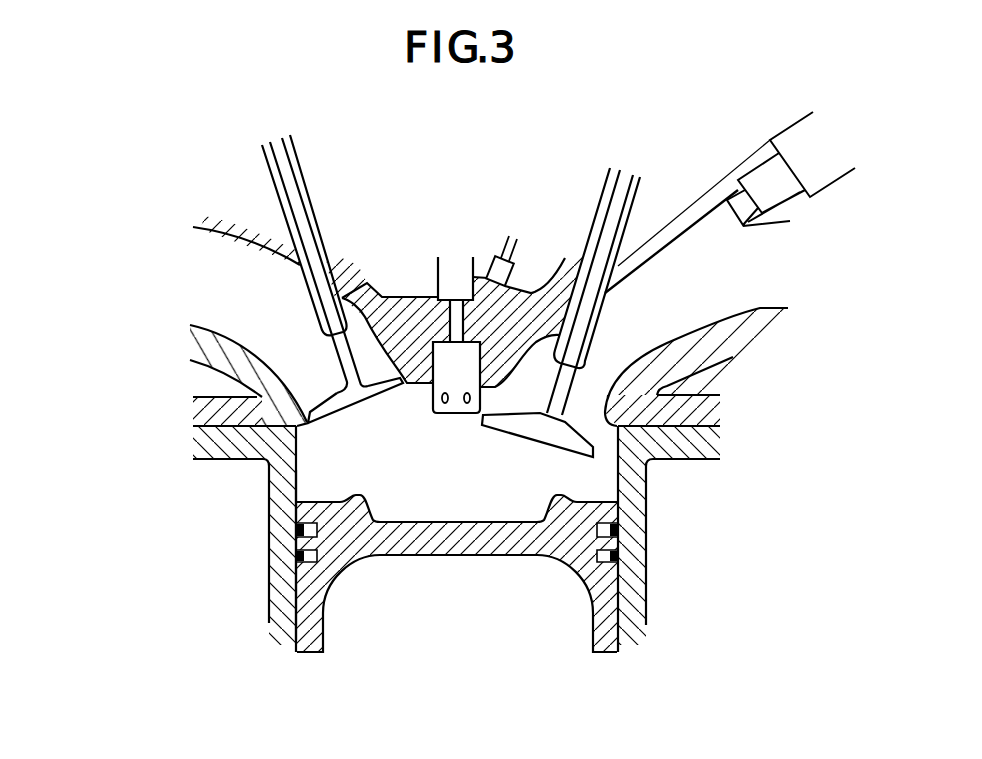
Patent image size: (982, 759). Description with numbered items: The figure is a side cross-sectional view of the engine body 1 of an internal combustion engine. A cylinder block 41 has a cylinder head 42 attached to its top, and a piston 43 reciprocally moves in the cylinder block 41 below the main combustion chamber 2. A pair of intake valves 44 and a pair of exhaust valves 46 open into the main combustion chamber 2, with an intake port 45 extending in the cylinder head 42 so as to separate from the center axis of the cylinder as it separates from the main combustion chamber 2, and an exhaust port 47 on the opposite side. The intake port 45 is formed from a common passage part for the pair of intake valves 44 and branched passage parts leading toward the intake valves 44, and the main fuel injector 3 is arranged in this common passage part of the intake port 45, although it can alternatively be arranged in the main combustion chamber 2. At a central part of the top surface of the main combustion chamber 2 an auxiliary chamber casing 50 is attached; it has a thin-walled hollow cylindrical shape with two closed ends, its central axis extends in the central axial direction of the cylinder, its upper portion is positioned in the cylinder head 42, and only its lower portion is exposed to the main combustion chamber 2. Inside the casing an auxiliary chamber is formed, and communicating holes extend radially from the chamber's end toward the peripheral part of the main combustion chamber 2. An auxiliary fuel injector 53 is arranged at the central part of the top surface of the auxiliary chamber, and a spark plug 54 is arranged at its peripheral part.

The engine body 1 is at (168, 440).
The main combustion chamber 2 is at (323, 467).
The main fuel injector 3 is at (806, 140).
The cylinder block 41 is at (270, 572).
The cylinder head 42 is at (252, 230).
The piston 43 is at (478, 545).
The intake valves 44 is at (557, 375).
The intake port 45 is at (615, 268).
The exhaust valves 46 is at (380, 297).
The exhaust port 47 is at (212, 283).
The auxiliary chamber casing 50 is at (449, 320).
The auxiliary fuel injector 53 is at (455, 268).
The spark plug 54 is at (493, 258).